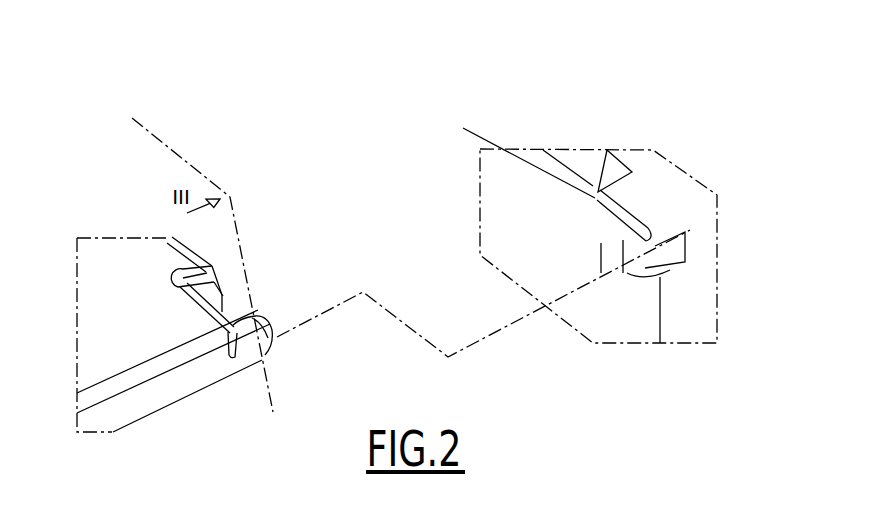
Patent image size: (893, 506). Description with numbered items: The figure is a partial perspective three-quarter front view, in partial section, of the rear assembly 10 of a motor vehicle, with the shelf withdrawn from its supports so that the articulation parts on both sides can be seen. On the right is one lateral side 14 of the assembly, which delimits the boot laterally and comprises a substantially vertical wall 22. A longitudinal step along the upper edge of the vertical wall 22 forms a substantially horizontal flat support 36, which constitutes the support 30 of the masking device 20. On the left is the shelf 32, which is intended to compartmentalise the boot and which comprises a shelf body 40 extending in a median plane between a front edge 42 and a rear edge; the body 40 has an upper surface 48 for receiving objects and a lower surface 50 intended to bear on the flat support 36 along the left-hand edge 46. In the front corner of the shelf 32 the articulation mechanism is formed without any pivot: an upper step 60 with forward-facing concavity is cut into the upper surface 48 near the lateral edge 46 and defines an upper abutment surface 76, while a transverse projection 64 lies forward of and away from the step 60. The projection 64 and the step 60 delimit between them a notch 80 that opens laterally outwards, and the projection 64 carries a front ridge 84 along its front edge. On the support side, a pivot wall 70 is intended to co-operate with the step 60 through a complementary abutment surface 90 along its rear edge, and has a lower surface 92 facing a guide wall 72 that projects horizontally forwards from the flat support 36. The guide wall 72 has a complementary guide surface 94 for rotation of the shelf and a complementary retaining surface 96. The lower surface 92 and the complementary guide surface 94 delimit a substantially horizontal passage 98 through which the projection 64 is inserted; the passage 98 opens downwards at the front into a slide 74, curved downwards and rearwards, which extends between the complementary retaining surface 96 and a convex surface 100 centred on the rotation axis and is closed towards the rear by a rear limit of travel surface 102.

The rear assembly 10 is at (564, 101).
The lateral side 14 is at (721, 218).
The masking device 20 is at (232, 157).
The vertical wall 22 is at (500, 224).
The support 30 is at (494, 181).
The shelf 32 is at (96, 199).
The flat support 36 is at (532, 160).
The shelf body 40 is at (86, 256).
The front edge 42 is at (155, 403).
The left-hand edge 46 is at (168, 236).
The upper surface 48 is at (152, 338).
The lower surface 50 is at (133, 425).
The upper step 60 is at (228, 262).
The transverse projection 64 is at (278, 370).
The pivot wall 70 is at (593, 190).
The guide wall 72 is at (582, 240).
The slide 74 is at (657, 256).
The upper abutment surface 76 is at (205, 267).
The notch 80 is at (230, 308).
The front ridge 84 is at (264, 360).
The complementary abutment surface 90 is at (516, 148).
The lower surface 92 is at (655, 227).
The complementary guide surface 94 is at (590, 190).
The complementary retaining surface 96 is at (618, 280).
The passage 98 is at (643, 185).
The convex surface 100 is at (660, 278).
The rear limit of travel surface 102 is at (597, 272).